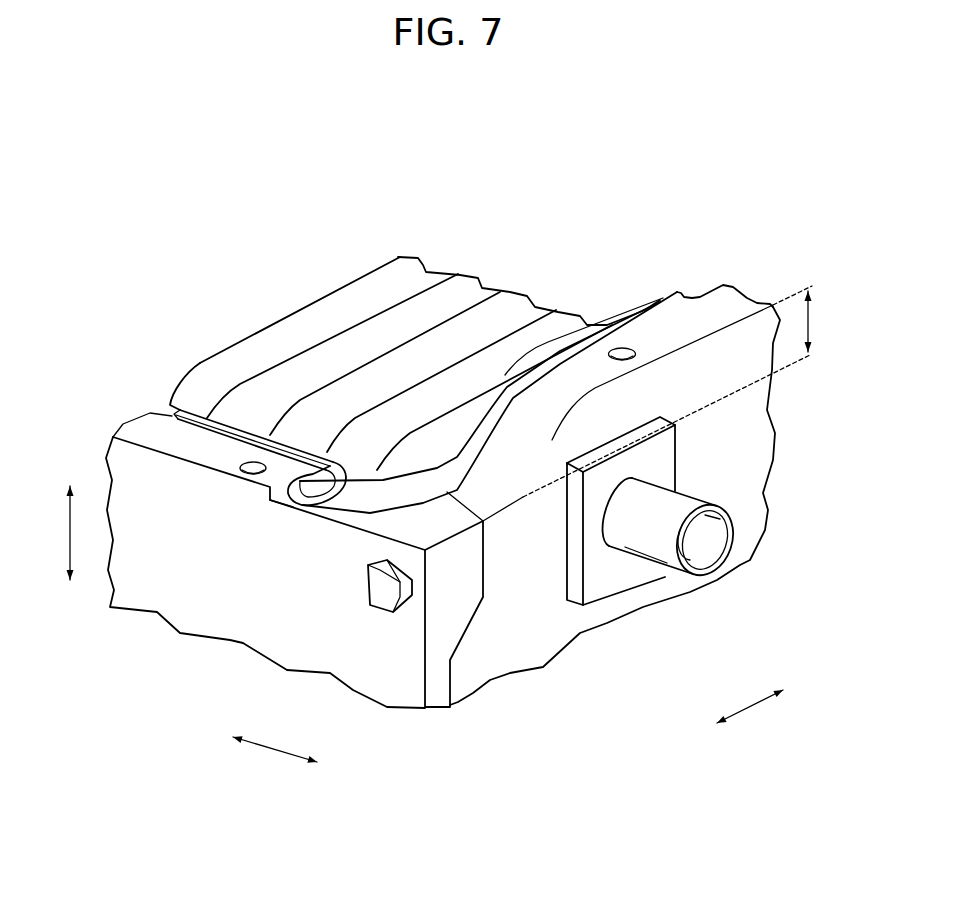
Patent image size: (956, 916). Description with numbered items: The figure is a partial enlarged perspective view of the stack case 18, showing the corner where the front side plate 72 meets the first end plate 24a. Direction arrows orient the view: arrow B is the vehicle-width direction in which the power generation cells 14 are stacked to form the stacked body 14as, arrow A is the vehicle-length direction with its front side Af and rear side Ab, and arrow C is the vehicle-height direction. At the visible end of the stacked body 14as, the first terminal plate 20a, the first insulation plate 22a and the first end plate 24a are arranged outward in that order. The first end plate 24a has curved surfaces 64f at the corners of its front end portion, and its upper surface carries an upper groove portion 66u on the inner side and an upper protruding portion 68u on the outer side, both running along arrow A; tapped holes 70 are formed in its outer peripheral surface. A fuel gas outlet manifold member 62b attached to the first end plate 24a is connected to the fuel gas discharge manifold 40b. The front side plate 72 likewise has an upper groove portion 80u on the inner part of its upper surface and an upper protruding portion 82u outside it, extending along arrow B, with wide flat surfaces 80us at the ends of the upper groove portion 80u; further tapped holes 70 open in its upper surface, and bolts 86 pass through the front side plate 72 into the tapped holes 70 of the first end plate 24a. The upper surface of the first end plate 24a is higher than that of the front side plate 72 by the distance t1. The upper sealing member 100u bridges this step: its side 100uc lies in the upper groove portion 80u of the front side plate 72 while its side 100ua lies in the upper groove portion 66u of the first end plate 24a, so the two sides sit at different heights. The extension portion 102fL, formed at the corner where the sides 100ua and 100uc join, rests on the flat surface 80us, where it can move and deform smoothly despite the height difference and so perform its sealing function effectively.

The stack case 18 is at (249, 239).
The power generation cells 14 is at (403, 327).
The stacked body 14as is at (437, 257).
The first terminal plate 20a is at (533, 347).
The upper groove portion 66u is at (583, 342).
The tapped holes 70 is at (621, 348).
The upper sealing member 100u is at (177, 407).
The side of upper sealing member 100uc is at (205, 418).
The side of upper sealing member 100ua is at (663, 303).
The extension portion 102fL is at (323, 503).
The upper protruding portion 68u is at (710, 307).
The distance t1 is at (805, 319).
The front side plate 72 is at (243, 637).
The upper protruding portion 82u is at (192, 446).
The upper groove portion 80u is at (243, 450).
The wide flat surfaces 80us is at (428, 522).
The first insulation plate 22a is at (430, 457).
The curved surfaces 64f is at (528, 432).
The first end plate 24a is at (550, 640).
The bolts 86 is at (383, 597).
The fuel gas outlet manifold member 62b is at (640, 549).
The fuel gas discharge manifold 40b is at (620, 573).
The arrow C is at (78, 533).
The arrow B is at (275, 743).
The arrow A is at (750, 702).
The arrow Af is at (703, 733).
The arrow Ab is at (799, 685).